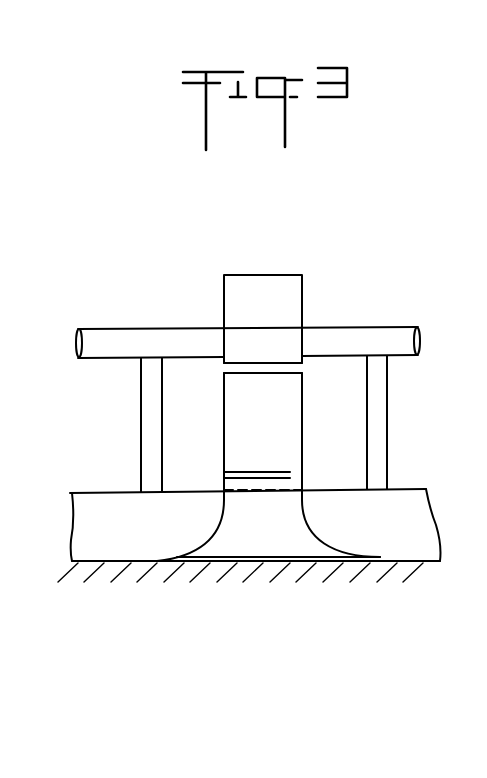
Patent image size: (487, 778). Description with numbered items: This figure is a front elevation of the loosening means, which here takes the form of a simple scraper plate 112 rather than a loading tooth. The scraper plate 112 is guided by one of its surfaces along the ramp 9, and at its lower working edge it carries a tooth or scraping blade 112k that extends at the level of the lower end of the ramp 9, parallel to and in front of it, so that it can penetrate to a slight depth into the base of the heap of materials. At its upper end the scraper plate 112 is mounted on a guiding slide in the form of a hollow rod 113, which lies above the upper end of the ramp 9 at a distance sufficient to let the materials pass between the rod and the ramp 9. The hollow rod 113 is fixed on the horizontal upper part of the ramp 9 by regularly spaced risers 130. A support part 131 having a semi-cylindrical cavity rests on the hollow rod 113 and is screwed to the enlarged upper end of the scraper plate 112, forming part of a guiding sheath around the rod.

The ramp 9 is at (107, 542).
The scraper plate 112 is at (280, 448).
The scraping blade 112k is at (183, 565).
The hollow rod 113 is at (113, 341).
The risers 130 is at (148, 413).
The support part 131 is at (264, 286).